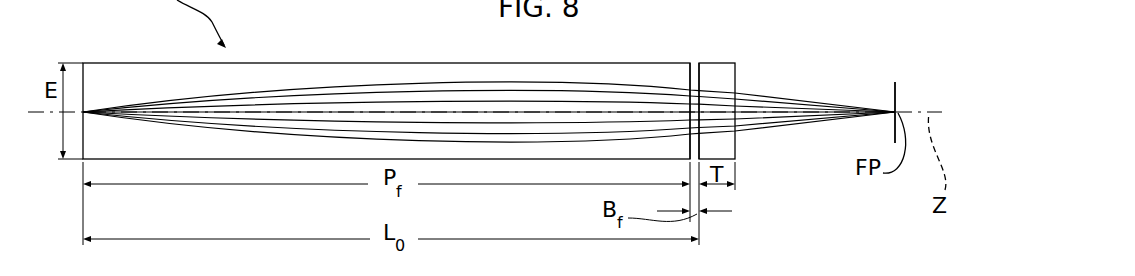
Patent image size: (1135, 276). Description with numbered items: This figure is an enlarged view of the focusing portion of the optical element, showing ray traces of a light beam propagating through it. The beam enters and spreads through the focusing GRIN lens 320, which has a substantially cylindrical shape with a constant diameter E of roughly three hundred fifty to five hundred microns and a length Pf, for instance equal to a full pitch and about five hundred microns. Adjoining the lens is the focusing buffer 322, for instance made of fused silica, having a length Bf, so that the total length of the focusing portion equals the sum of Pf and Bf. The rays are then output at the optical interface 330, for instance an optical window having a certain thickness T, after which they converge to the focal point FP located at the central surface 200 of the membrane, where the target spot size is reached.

The focusing GRIN lens 320 is at (377, 72).
The focusing buffer 322 is at (693, 63).
The optical interface 330 is at (725, 75).
The central surface of the membrane 200 is at (893, 92).